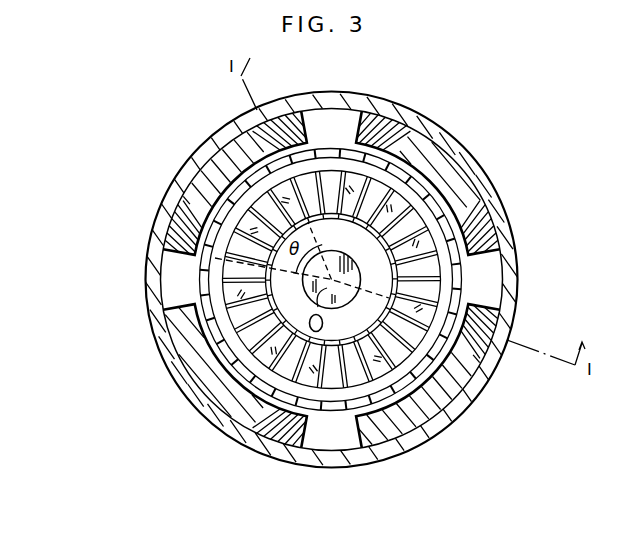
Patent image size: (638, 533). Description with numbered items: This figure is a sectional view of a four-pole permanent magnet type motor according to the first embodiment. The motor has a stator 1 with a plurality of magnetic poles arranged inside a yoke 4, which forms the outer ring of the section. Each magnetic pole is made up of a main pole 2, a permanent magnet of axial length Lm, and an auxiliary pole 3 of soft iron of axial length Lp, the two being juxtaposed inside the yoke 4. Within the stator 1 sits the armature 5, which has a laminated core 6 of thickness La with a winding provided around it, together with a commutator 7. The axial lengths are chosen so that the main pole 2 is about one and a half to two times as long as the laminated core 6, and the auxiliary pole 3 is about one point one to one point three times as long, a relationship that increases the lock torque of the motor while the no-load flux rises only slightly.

The stator 1 is at (197, 138).
The main pole 2 is at (468, 367).
The auxiliary pole 3 is at (506, 302).
The yoke 4 is at (498, 196).
The armature 5 is at (255, 289).
The laminated core 6 is at (463, 263).
The commutator 7 is at (392, 222).